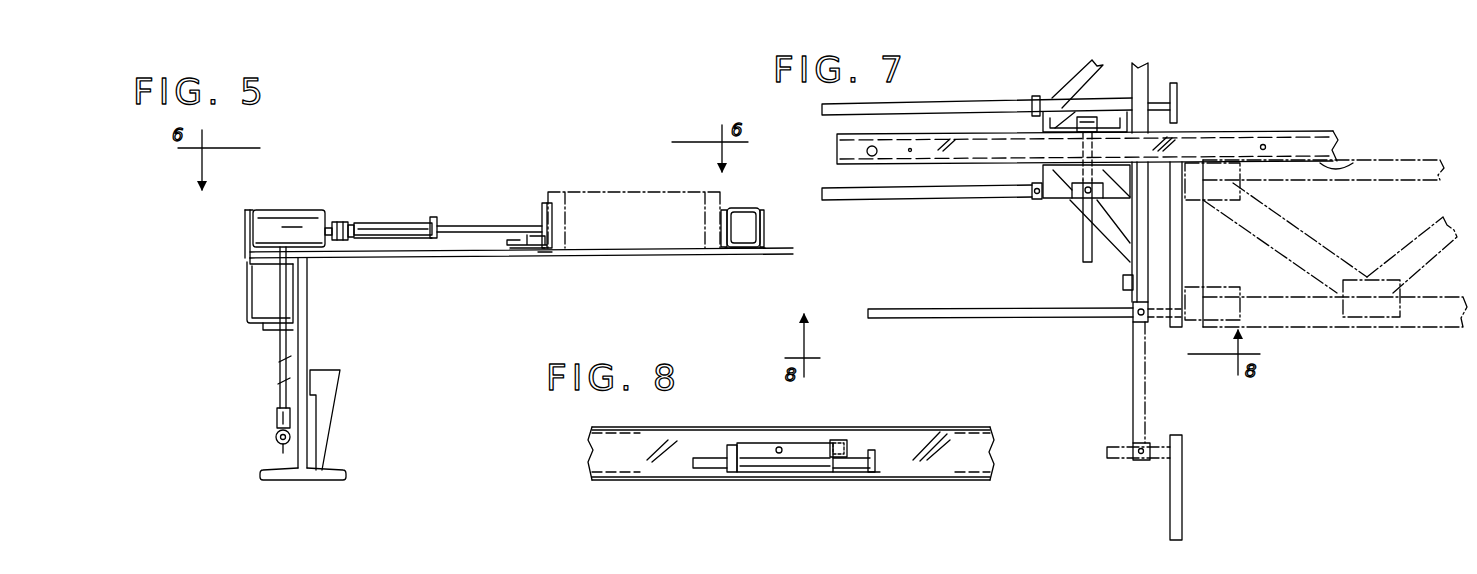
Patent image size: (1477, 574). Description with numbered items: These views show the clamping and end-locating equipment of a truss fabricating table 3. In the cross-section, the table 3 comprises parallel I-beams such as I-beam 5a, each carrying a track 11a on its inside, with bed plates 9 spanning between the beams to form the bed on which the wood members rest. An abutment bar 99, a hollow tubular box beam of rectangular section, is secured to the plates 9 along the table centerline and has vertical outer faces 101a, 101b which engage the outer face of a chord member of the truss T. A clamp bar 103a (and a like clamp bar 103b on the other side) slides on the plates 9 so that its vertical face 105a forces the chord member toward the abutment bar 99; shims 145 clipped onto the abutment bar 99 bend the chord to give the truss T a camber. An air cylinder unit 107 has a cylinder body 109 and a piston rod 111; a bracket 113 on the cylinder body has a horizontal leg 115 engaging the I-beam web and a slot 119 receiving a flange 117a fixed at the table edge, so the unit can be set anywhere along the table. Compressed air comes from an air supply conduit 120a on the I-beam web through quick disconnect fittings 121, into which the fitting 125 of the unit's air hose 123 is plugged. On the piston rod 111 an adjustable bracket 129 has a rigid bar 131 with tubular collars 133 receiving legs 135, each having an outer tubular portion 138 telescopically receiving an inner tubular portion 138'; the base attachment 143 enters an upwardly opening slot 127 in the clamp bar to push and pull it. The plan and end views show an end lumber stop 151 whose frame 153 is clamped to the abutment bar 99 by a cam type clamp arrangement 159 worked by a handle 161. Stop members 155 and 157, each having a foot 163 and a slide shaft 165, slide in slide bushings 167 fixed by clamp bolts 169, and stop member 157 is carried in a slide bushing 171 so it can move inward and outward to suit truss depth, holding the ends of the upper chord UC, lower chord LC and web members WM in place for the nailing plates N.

In FIG. 5, the table 3 is at (297, 383).
In FIG. 5, the I-beam 5a is at (293, 357).
In FIG. 5, the plates 9 is at (630, 257).
In FIG. 5, the track 11a is at (330, 370).
In FIG. 5, the abutment bar 99 is at (738, 208).
In FIG. 8, the abutment bar 99 is at (905, 427).
In FIG. 7, the abutment bar 99 is at (1328, 129).
In FIG. 5, the vertical outer face 101a is at (724, 250).
In FIG. 7, the vertical outer face 101a is at (1283, 131).
In FIG. 5, the vertical outer face 101b is at (764, 253).
In FIG. 5, the clamp bar 103a is at (552, 207).
In FIG. 7, the clamp bar 103b is at (1355, 162).
In FIG. 5, the vertical face 105a is at (553, 235).
In FIG. 5, the air cylinder unit 107 is at (413, 172).
In FIG. 5, the cylinder body 109 is at (289, 212).
In FIG. 5, the piston rod 111 is at (339, 220).
In FIG. 5, the bracket 113 is at (263, 300).
In FIG. 5, the horizontal leg 115 is at (265, 325).
In FIG. 5, the flange 117a is at (248, 262).
In FIG. 5, the slot 119 is at (245, 252).
In FIG. 5, the air supply conduit 120a is at (280, 453).
In FIG. 5, the quick disconnect fitting 121 is at (277, 433).
In FIG. 5, the air hose 123 is at (287, 295).
In FIG. 5, the fitting 125 is at (277, 417).
In FIG. 5, the slot 127 is at (513, 247).
In FIG. 5, the adjustable bracket 129 is at (447, 220).
In FIG. 5, the rigid bar 131 is at (397, 220).
In FIG. 5, the tubular collar 133 is at (347, 221).
In FIG. 5, the legs 135 is at (407, 240).
In FIG. 5, the outer tubular portion 138 is at (456, 211).
In FIG. 5, the inner tubular portion 138' is at (490, 289).
In FIG. 5, the attachment 143 is at (540, 253).
In FIG. 5, the shim 145 is at (722, 220).
In FIG. 7, the end lumber stop 151 is at (1105, 325).
In FIG. 8, the frame 153 is at (731, 445).
In FIG. 7, the frame 153 is at (1057, 197).
In FIG. 7, the stop member 155 is at (1177, 164).
In FIG. 7, the stop member 157 is at (1180, 260).
In FIG. 7, the cam type clamp arrangement 159 is at (1081, 230).
In FIG. 7, the handle 161 is at (1088, 263).
In FIG. 8, the foot 163 is at (878, 460).
In FIG. 7, the foot 163 is at (1173, 327).
In FIG. 8, the slide shaft 165 is at (785, 453).
In FIG. 7, the slide shaft 165 is at (963, 199).
In FIG. 7, the slide bushing 167 is at (1145, 323).
In FIG. 7, the clamp bolt 169 is at (1032, 189).
In FIG. 8, the slide bushing 171 is at (839, 440).
In FIG. 7, the slide bushing 171 is at (1137, 260).
In FIG. 7, the lower chord member LC is at (1303, 182).
In FIG. 7, the truss T is at (1312, 236).
In FIG. 7, the web member WM is at (1337, 260).
In FIG. 7, the upper chord member UC is at (1337, 328).
In FIG. 7, the nailing plate N is at (1403, 308).